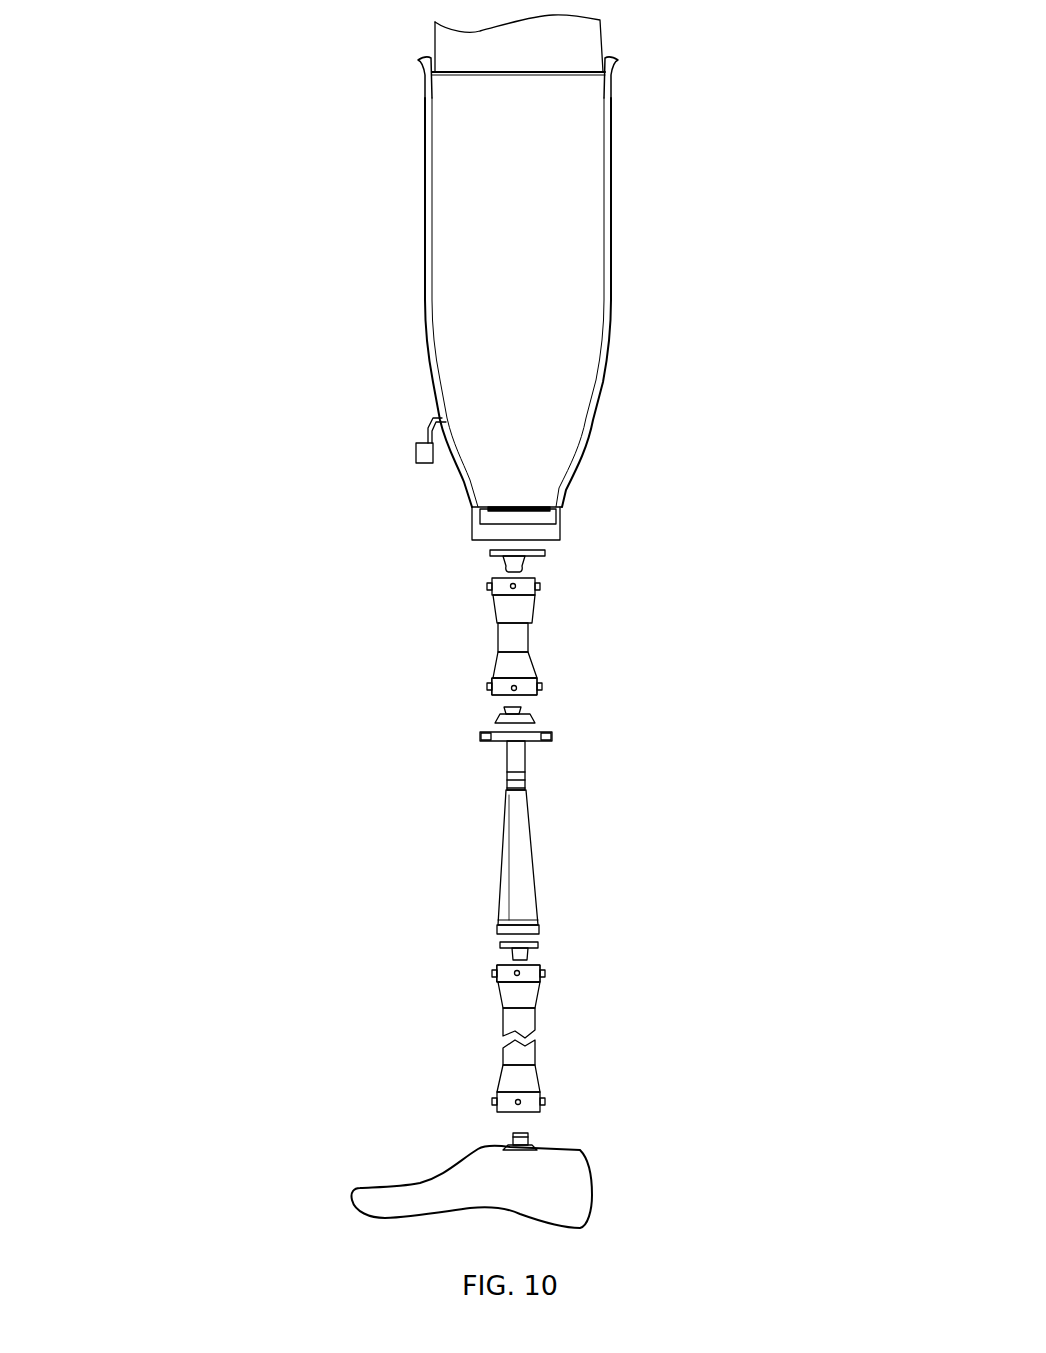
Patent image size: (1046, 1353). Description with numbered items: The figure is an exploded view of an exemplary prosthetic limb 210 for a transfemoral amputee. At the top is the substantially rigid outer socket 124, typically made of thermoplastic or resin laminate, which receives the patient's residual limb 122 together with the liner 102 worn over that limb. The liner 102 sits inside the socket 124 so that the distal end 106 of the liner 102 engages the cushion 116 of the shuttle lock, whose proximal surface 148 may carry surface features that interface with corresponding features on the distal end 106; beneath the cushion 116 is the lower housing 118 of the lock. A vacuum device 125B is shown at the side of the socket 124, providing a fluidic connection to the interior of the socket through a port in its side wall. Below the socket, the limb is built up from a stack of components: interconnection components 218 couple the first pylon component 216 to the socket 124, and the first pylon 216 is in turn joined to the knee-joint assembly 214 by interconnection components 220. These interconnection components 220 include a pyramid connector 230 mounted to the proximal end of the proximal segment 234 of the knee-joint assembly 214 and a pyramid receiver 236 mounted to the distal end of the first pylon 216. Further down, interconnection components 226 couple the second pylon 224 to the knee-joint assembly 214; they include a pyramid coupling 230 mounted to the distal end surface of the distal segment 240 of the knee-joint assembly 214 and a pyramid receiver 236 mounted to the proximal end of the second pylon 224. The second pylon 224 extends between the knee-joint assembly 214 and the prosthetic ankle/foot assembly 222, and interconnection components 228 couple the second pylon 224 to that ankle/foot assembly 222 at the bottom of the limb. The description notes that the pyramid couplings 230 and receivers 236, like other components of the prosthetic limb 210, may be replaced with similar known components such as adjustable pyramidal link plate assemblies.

The liner 102 is at (443, 219).
The distal end of the liner 106 is at (484, 532).
The cushion 116 is at (540, 517).
The lower housing 118 is at (497, 509).
The residual limb 122 is at (582, 39).
The socket 124 is at (607, 192).
The vacuum device 125B is at (418, 452).
The proximal surface of the lock 148 is at (518, 500).
The prosthetic limb 210 is at (245, 500).
The knee-joint assembly 214 is at (517, 864).
The first pylon component 216 is at (520, 637).
The interconnection components 218 is at (580, 515).
The interconnection components 220 is at (580, 658).
The prosthetic ankle/foot assembly 222 is at (572, 1187).
The second pylon 224 is at (510, 1020).
The interconnection components 226 is at (580, 932).
The interconnection components 228 is at (580, 1075).
The pyramid connector 230 is at (500, 722).
The proximal segment of the knee-joint assembly 234 is at (482, 736).
The pyramid receiver 236 is at (494, 673).
The distal segment of the knee-joint assembly 240 is at (510, 912).